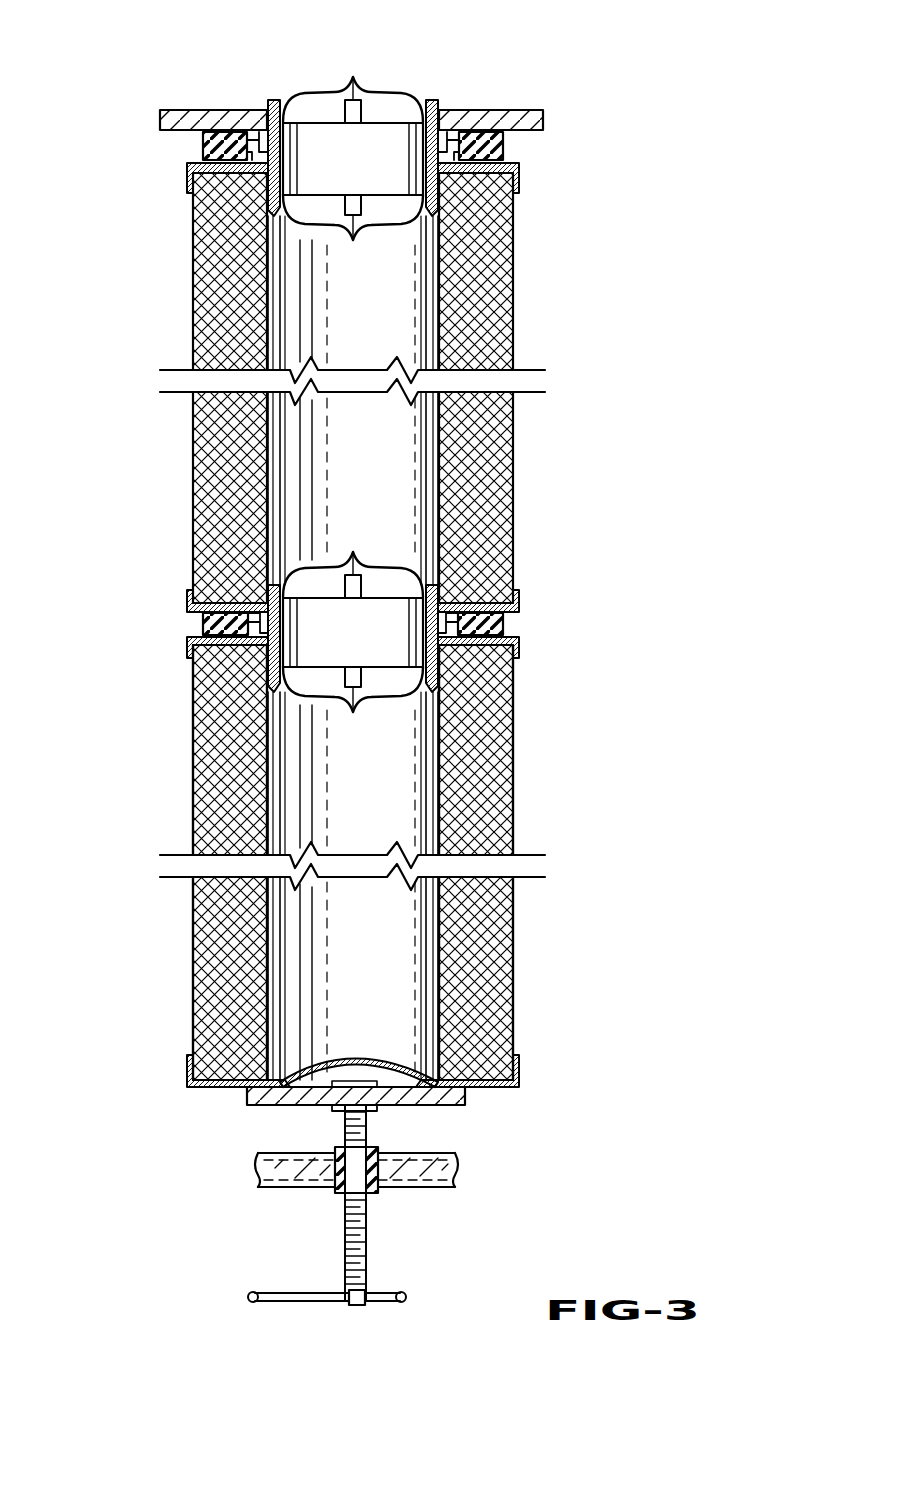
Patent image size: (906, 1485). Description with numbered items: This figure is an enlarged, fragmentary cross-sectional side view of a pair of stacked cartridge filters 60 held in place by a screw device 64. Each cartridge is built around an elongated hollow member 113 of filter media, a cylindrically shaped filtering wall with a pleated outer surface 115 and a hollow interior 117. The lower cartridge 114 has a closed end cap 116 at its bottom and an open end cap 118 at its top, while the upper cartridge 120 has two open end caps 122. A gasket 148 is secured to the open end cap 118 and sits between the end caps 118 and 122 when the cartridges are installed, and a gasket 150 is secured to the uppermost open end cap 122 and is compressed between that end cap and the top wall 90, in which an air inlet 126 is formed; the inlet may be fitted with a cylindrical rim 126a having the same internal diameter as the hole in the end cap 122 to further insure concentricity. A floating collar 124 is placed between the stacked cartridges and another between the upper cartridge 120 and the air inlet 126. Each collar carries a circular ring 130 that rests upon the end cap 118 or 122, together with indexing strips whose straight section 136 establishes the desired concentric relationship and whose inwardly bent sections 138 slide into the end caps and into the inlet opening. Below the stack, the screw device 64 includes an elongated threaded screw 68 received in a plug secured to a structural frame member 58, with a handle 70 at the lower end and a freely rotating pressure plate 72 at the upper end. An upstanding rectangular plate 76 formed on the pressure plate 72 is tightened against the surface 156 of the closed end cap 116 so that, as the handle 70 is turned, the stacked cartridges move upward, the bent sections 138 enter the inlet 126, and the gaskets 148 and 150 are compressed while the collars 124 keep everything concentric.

The structural frame member 58 is at (452, 1182).
The cartridge filter 60 is at (150, 712).
The screw device 64 is at (318, 1210).
The threaded screw 68 is at (368, 1231).
The handle 70 is at (302, 1302).
The pressure plate 72 is at (308, 1113).
The upstanding rectangular plate 76 is at (460, 1106).
The top wall 90 is at (522, 113).
The elongated hollow member 113 is at (497, 521).
The lower cartridge 114 is at (515, 728).
The pleated outer surface 115 is at (194, 791).
The closed end cap 116 is at (188, 1076).
The hollow interior 117 is at (268, 944).
The open end cap 118 is at (520, 653).
The upper cartridge 120 is at (515, 467).
The open end cap 122 is at (518, 180).
The floating collar 124 is at (403, 72).
The air inlet 126 is at (270, 100).
The cylindrical rim 126a is at (434, 112).
The circular ring 130 is at (262, 143).
The straight section 136 is at (424, 634).
The inwardly bent section 138 is at (353, 78).
The gasket 148 is at (204, 625).
The gasket 150 is at (500, 150).
The surface 156 is at (363, 1062).